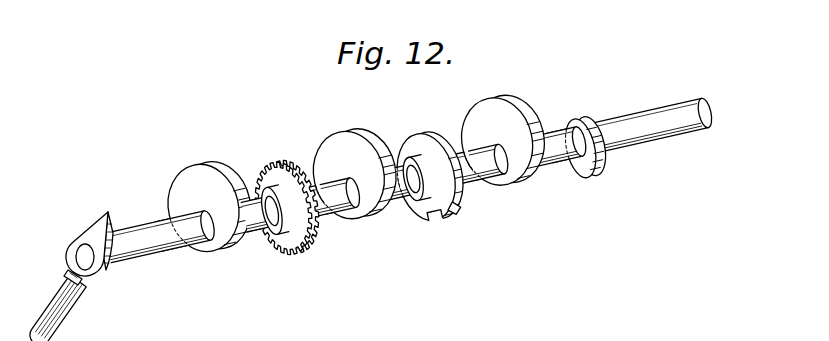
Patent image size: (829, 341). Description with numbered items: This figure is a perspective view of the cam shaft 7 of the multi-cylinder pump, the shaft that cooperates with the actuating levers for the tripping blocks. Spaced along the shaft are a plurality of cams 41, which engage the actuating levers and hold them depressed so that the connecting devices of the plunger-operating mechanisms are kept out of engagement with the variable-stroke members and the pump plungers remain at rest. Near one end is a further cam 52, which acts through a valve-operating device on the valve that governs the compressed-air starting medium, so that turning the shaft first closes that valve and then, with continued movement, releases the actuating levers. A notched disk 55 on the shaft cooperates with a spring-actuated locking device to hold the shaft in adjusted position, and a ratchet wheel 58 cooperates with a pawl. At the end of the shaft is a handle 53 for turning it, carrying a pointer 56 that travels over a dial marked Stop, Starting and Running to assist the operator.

The shaft 7 is at (188, 245).
The cams 41 is at (216, 151).
The cam 52 is at (604, 169).
The handle 53 is at (61, 313).
The notched disk 55 is at (457, 208).
The pointer 56 is at (105, 230).
The ratchet wheel 58 is at (293, 145).